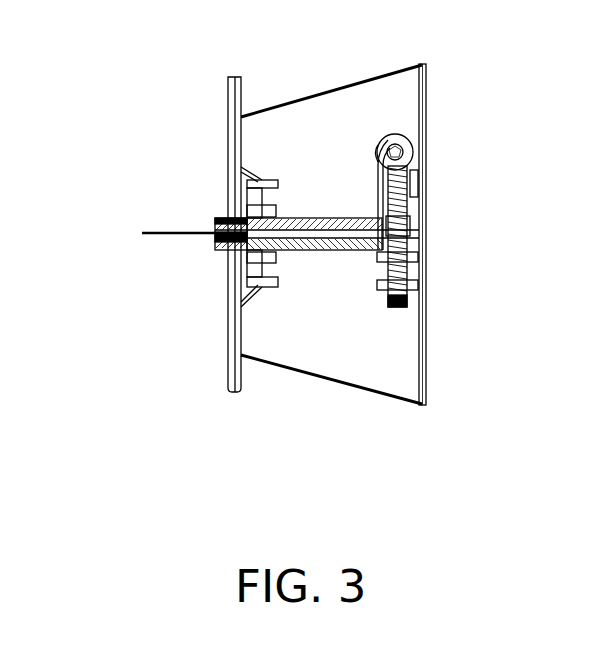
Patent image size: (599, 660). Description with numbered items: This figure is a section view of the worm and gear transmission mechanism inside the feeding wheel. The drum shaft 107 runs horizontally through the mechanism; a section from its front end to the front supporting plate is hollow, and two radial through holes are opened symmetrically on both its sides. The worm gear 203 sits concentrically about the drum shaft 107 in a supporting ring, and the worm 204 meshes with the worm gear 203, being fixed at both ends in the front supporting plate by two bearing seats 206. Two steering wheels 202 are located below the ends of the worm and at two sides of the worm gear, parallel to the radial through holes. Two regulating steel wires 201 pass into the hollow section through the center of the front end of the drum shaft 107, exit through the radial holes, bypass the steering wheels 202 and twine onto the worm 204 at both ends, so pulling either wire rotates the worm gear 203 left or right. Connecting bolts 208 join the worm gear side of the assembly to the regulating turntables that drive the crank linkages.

The drum shaft 107 is at (297, 220).
The regulating steel wires 201 is at (187, 236).
The steering wheels 202 is at (408, 222).
The worm gear 203 is at (392, 307).
The worm 204 is at (378, 137).
The bearing seats 206 is at (424, 66).
The connecting bolts 208 is at (419, 296).